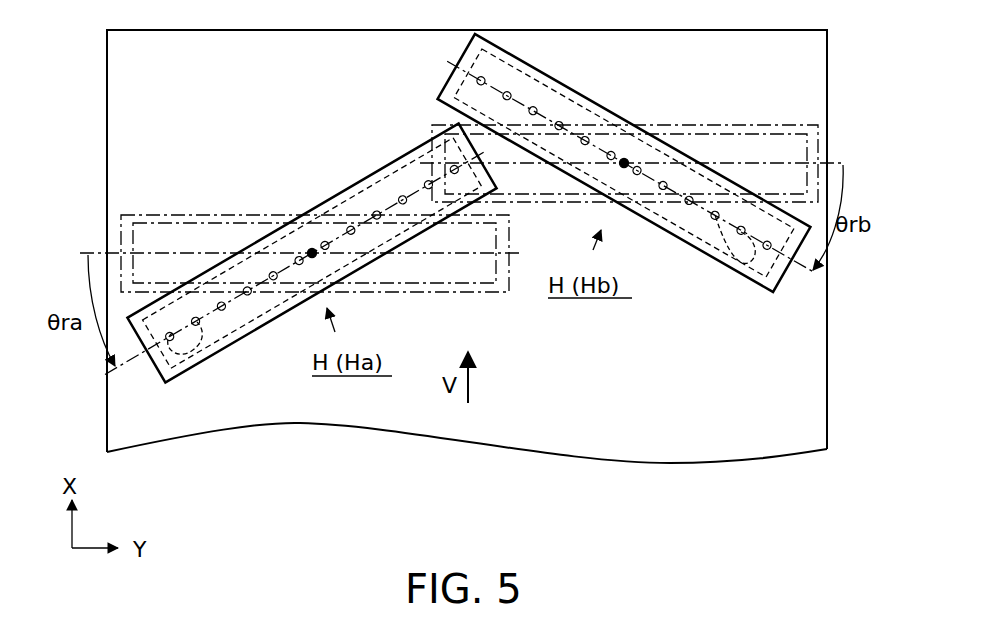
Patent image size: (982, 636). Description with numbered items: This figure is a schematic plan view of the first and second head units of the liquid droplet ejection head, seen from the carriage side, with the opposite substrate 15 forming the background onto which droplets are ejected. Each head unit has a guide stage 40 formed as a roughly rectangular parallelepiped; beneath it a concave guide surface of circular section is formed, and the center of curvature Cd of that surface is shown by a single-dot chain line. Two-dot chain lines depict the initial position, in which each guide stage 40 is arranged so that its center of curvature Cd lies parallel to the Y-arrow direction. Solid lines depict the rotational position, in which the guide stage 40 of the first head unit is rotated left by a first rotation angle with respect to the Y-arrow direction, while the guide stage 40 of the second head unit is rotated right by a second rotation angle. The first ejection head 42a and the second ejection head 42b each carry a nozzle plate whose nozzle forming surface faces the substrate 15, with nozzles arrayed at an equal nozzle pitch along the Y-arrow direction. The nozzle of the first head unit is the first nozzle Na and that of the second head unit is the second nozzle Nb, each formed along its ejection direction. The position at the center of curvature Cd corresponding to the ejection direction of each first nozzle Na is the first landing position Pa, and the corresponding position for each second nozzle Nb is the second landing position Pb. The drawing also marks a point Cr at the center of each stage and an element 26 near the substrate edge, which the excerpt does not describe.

The opposite substrate 15 is at (107, 52).
The carriage 26 is at (115, 88).
The guide stage 40 is at (165, 215).
The first ejection head 42a is at (205, 215).
The second ejection head 42b is at (522, 60).
The rotation center of head Cr is at (312, 253).
The center of curvature Cd is at (157, 372).
The first nozzle Na is at (251, 292).
The first landing position Pa is at (197, 324).
The second nozzle Nb is at (689, 203).
The second landing position Pb is at (741, 232).